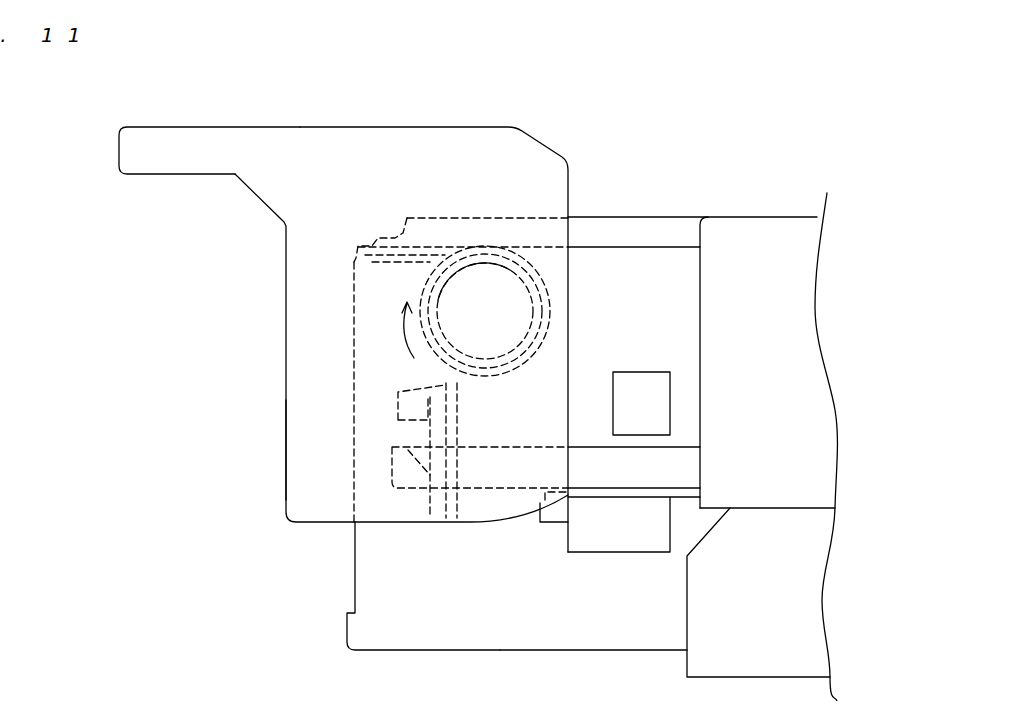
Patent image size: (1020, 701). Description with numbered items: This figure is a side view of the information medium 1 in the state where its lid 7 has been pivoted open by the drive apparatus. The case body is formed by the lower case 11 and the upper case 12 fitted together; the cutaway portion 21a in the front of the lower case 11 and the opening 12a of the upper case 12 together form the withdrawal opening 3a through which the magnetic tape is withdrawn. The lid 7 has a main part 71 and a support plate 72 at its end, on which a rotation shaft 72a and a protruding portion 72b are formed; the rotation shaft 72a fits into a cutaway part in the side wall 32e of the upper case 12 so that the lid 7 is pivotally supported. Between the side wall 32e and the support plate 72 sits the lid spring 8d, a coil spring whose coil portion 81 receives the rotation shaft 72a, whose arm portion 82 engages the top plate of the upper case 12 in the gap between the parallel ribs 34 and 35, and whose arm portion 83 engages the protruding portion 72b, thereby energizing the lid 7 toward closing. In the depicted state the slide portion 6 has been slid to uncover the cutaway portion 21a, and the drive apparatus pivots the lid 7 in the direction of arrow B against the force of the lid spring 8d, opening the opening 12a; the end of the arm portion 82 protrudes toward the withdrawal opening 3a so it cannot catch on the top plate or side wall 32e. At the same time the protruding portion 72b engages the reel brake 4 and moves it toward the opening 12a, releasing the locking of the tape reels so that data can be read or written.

The information medium 1 is at (639, 114).
The withdrawal opening 3a is at (278, 452).
The reel brake 4 is at (630, 475).
The slide portion 6 is at (802, 600).
The lid 7 is at (204, 330).
The lid spring 8d is at (560, 342).
The lower case 11 is at (321, 575).
The upper case 12 is at (849, 340).
The opening 12a is at (347, 373).
The cutaway portion 21a is at (497, 628).
The side wall 32e is at (637, 262).
The rib 34 is at (385, 230).
The rib 35 is at (405, 258).
The main part 71 is at (159, 165).
The support plate 72 is at (296, 283).
The rotation shaft 72a is at (495, 313).
The protruding portion 72b is at (412, 413).
The coil portion 81 is at (500, 250).
The arm portion 82 is at (427, 250).
The arm portion 83 is at (457, 397).